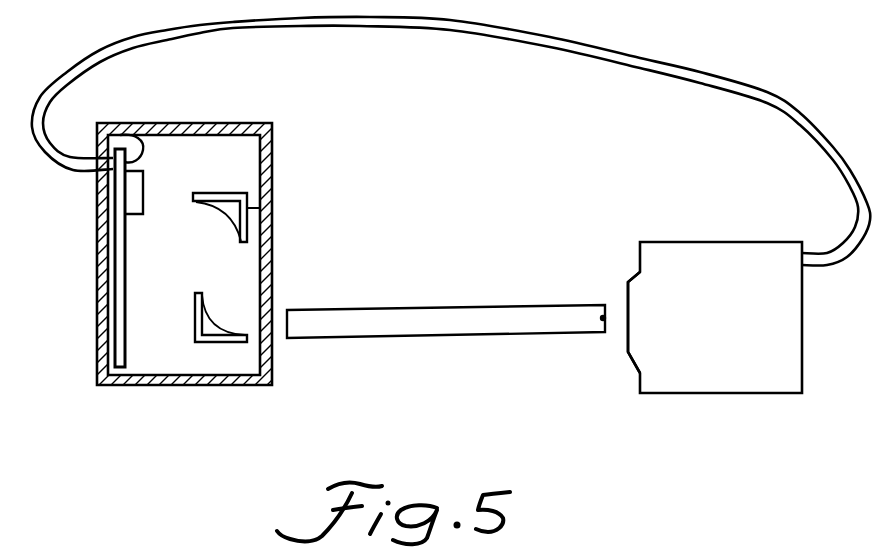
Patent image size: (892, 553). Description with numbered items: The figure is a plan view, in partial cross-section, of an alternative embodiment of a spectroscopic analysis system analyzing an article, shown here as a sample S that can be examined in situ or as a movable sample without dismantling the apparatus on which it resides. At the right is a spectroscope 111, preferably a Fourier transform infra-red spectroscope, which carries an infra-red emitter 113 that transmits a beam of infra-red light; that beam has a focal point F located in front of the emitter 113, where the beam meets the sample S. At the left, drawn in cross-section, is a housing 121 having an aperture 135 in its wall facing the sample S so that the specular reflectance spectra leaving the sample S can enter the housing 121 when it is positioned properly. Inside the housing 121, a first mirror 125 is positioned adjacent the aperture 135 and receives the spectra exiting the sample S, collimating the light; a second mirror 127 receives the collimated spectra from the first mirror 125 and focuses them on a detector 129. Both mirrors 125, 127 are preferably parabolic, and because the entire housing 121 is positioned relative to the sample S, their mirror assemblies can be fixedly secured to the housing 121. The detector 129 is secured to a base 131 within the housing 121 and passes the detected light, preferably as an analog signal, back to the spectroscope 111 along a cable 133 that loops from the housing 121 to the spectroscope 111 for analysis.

The spectroscope 111 is at (762, 373).
The infra-red emitter 113 is at (631, 280).
The housing 121 is at (332, 257).
The first mirror 125 is at (227, 343).
The second mirror 127 is at (266, 208).
The detector 129 is at (147, 211).
The base 131 is at (135, 136).
The cable 133 is at (657, 65).
The aperture 135 is at (274, 328).
The sample S is at (420, 309).
The focal point F is at (603, 318).